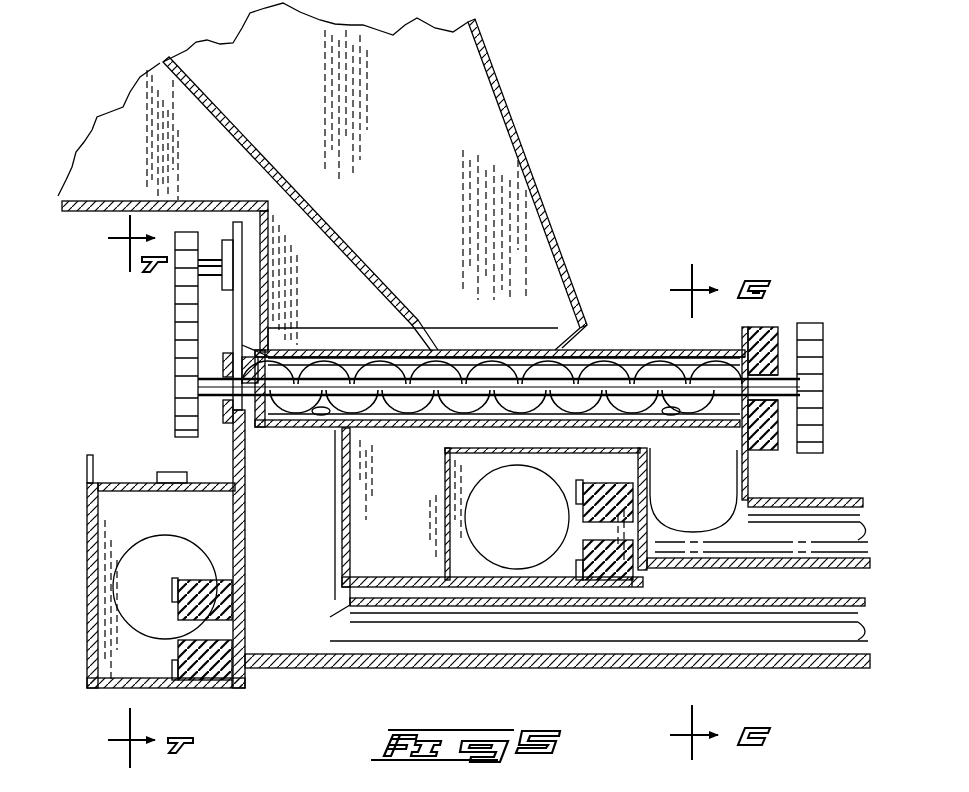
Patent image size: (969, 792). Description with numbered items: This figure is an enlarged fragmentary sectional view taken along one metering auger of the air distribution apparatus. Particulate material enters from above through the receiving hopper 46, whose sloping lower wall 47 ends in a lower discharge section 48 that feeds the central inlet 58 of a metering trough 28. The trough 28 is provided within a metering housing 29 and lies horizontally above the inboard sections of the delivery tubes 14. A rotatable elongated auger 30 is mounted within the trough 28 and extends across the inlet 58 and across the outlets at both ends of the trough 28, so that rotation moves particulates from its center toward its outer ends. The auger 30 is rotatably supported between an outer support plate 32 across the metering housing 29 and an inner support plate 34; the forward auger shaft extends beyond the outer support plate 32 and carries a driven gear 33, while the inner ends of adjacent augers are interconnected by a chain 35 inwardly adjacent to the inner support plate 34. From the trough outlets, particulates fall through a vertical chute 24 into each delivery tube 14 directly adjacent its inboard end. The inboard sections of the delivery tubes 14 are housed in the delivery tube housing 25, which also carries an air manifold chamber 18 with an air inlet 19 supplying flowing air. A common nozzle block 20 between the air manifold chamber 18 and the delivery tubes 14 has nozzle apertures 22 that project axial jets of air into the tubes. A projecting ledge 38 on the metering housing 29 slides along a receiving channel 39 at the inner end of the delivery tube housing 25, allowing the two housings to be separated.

The delivery tube 14 is at (842, 498).
The air manifold chamber 18 is at (112, 530).
The air inlet 19 is at (160, 595).
The nozzle block 20 is at (233, 681).
The nozzle aperture 22 is at (330, 620).
The vertical chute 24 is at (309, 543).
The delivery tube housing 25 is at (356, 670).
The metering trough 28 is at (644, 365).
The metering housing 29 is at (596, 350).
The auger 30 is at (484, 358).
The outer support plate 32 is at (776, 330).
The driven gear 33 is at (812, 407).
The inner support plate 34 is at (227, 428).
The chain 35 is at (187, 322).
The projecting ledge 38 is at (197, 468).
The receiving channel 39 is at (172, 476).
The receiving hopper 46 is at (500, 90).
The sloping lower wall 47 is at (325, 237).
The lower discharge section 48 is at (535, 286).
The inlet 58 is at (445, 352).